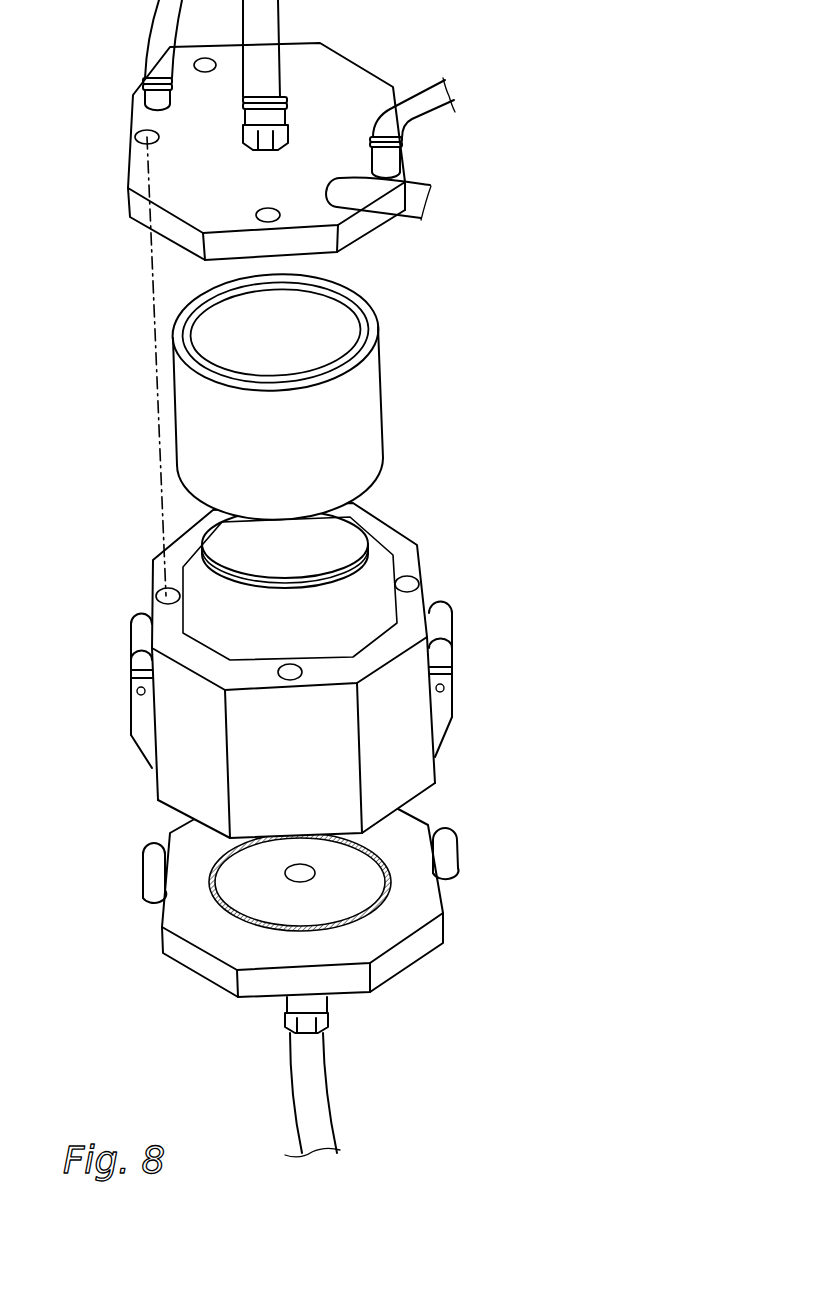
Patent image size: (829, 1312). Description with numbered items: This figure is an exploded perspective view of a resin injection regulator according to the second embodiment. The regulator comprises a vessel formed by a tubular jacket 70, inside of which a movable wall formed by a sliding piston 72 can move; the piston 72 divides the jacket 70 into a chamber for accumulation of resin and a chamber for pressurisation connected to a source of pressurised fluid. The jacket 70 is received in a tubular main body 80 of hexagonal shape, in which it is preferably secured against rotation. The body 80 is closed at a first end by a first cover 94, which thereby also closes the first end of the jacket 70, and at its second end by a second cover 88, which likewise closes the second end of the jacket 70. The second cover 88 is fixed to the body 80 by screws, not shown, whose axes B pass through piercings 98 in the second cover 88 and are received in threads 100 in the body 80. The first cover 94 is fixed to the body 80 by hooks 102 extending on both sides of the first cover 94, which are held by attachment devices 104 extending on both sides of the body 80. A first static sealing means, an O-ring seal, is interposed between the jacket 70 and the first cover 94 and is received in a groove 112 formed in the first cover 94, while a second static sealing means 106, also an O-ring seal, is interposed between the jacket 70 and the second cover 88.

The tubular jacket 70 is at (355, 417).
The sliding piston 72 is at (337, 537).
The tubular main body 80 is at (423, 597).
The second cover 88 is at (183, 232).
The first cover 94 is at (167, 927).
The piercings 98 is at (133, 132).
The threads 100 is at (160, 588).
The hooks 102 is at (442, 850).
The attachment devices 104 is at (443, 702).
The second static sealing means 106 is at (362, 310).
The groove 112 is at (255, 927).
The axes B is at (157, 365).